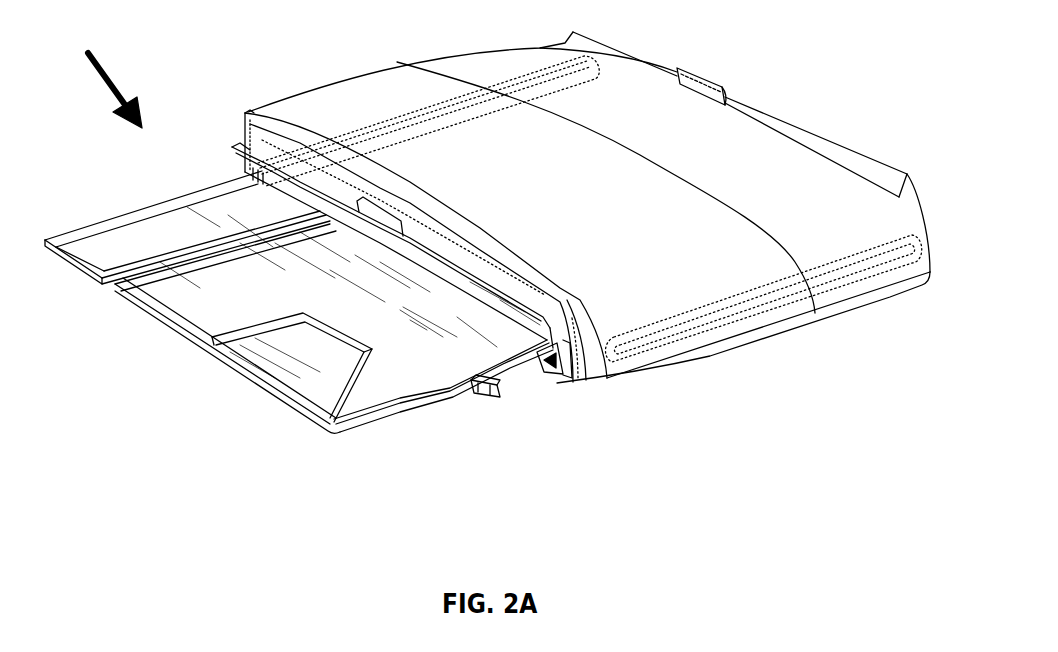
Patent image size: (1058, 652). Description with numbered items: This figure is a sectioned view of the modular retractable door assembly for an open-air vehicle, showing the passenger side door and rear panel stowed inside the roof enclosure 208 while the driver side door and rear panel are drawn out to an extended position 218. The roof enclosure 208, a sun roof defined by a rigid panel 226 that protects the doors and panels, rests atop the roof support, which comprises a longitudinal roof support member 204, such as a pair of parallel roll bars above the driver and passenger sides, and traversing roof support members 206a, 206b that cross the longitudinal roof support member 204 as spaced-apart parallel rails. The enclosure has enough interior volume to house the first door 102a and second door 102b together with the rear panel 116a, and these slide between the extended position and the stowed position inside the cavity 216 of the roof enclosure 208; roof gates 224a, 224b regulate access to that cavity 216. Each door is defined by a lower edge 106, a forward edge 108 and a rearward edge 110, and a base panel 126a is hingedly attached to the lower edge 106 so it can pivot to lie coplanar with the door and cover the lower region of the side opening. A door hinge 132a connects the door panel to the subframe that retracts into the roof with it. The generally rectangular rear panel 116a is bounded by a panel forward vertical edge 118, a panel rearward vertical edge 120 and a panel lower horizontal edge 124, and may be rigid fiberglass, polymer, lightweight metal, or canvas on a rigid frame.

The first door 102a is at (374, 301).
The second door 102b is at (667, 292).
The lower edge 106 is at (187, 335).
The forward edge 108 is at (393, 410).
The rearward edge 110 is at (137, 296).
The rear panel 116a is at (158, 256).
The panel forward vertical edge 118 is at (227, 237).
The panel rearward vertical edge 120 is at (98, 222).
The panel lower horizontal edge 124 is at (75, 265).
The base panel 126a is at (320, 372).
The door hinge 132a is at (486, 398).
The longitudinal roof support member 204 is at (567, 380).
The traversing roof support member 206a is at (818, 268).
The traversing roof support member 206b is at (428, 108).
The roof enclosure 208 is at (908, 213).
The cavity 216 is at (540, 370).
The extended position 218 is at (101, 77).
The roof gate 224a is at (247, 112).
The roof gate 224b is at (670, 70).
The rigid panel 226 is at (572, 214).